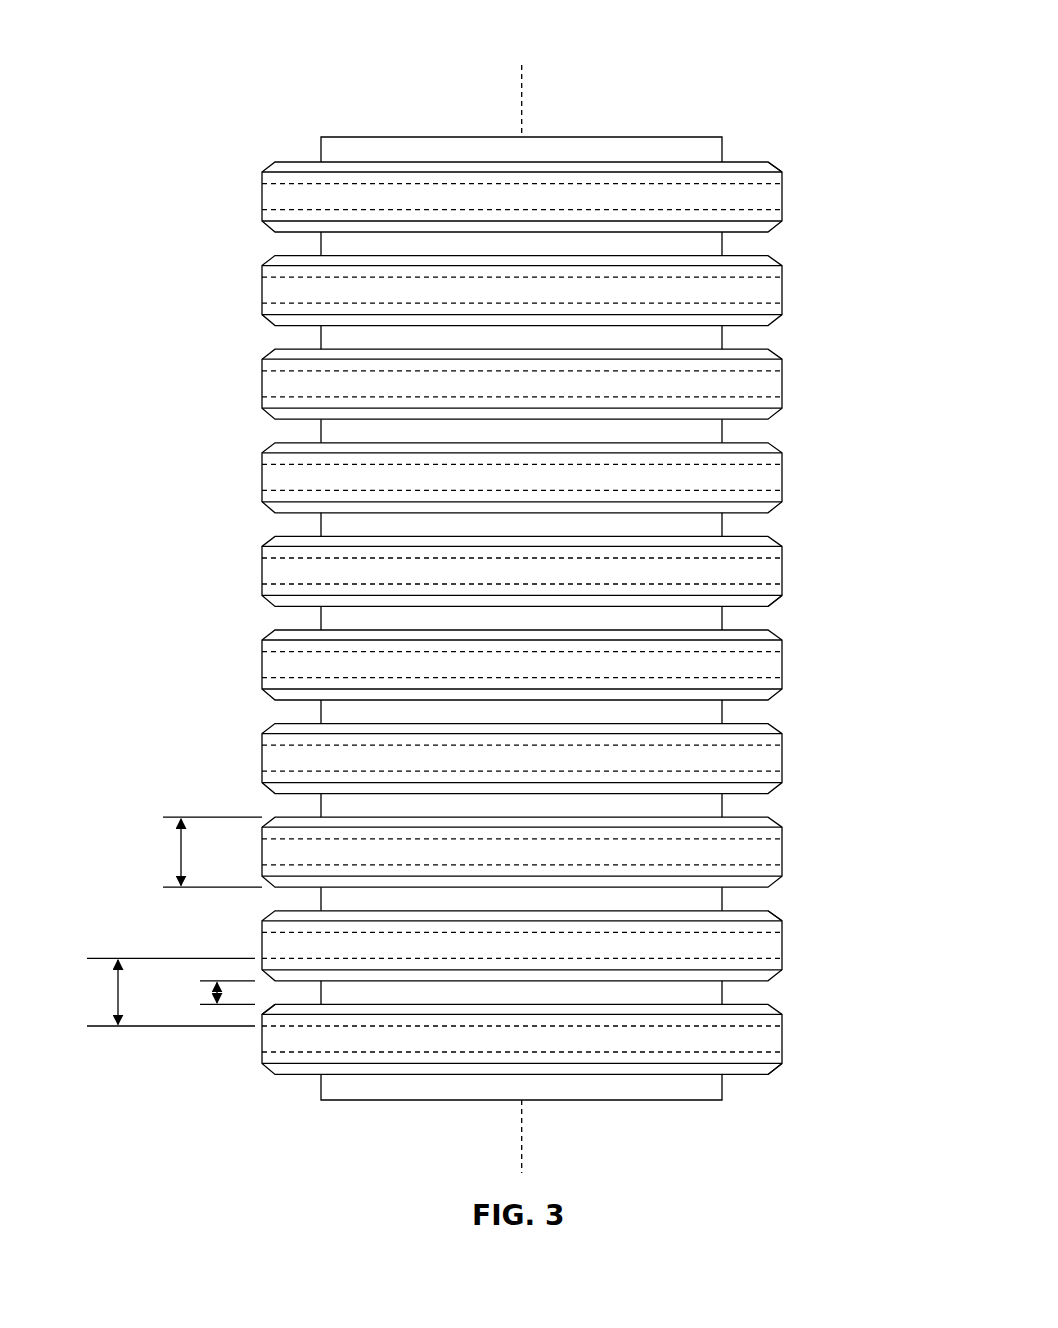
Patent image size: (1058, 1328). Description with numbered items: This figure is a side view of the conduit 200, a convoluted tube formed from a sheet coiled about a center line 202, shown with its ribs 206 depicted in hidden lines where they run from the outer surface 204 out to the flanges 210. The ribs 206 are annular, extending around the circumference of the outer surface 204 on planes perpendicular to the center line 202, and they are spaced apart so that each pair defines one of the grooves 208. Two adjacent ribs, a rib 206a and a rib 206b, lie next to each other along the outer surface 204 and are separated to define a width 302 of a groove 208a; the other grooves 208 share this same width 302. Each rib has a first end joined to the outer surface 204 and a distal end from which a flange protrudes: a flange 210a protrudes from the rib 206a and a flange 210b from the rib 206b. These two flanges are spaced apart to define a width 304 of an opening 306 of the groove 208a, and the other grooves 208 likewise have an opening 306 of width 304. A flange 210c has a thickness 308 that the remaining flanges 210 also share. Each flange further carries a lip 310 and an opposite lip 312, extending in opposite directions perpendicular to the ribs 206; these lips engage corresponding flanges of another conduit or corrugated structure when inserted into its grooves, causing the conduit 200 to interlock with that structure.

The conduit 200 is at (570, 581).
The center line 202 is at (523, 100).
The outer surface 204 is at (670, 148).
The ribs 206 is at (783, 197).
The grooves 208 is at (754, 242).
The flanges 210 is at (750, 170).
The lip 310 is at (770, 537).
The lip 312 is at (770, 606).
The flange 210c is at (767, 820).
The flange 210b is at (767, 915).
The rib 206b is at (778, 950).
The groove 208a is at (764, 994).
The rib 206a is at (778, 1038).
The flange 210a is at (767, 1074).
The width 302 is at (117, 993).
The width 304 is at (217, 993).
The opening 306 is at (292, 1002).
The thickness 308 is at (180, 852).